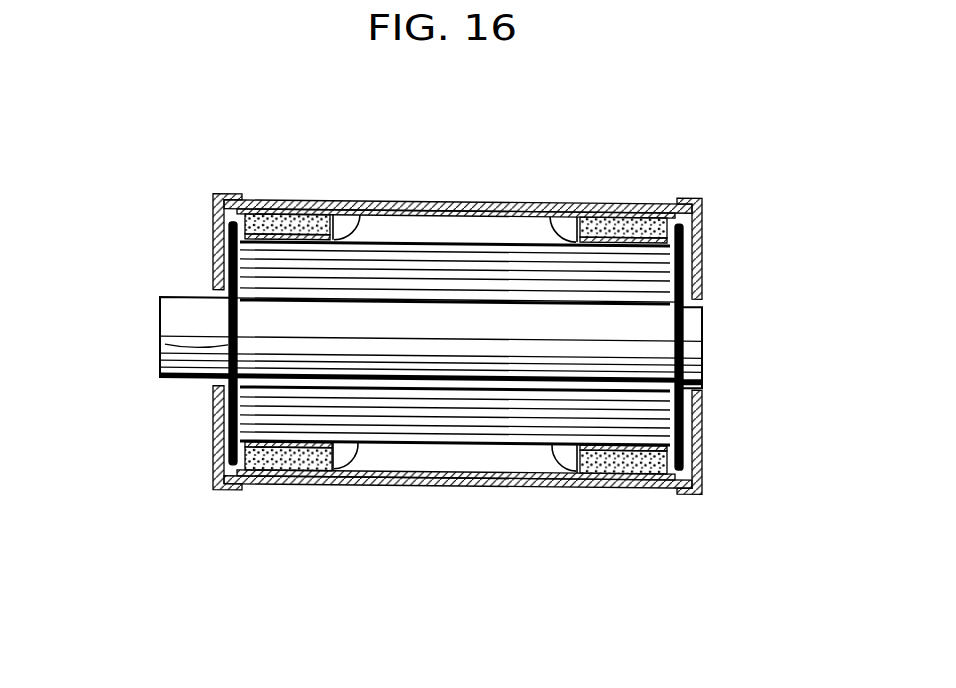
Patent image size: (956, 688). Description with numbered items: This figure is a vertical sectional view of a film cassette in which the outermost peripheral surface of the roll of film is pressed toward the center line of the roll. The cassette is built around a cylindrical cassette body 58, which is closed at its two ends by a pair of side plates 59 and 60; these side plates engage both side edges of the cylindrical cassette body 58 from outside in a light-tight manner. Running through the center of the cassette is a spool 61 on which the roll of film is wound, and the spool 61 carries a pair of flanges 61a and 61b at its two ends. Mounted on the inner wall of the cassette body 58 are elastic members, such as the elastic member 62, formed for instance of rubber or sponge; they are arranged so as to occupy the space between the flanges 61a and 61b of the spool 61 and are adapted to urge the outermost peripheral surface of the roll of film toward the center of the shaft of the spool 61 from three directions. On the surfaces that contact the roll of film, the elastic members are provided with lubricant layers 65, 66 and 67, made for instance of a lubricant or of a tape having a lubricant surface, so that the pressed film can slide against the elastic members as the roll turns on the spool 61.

The cylindrical cassette body 58 is at (450, 203).
The side plate 59 is at (702, 250).
The side plate 60 is at (213, 252).
The spool 61 is at (160, 318).
The flange 61a is at (702, 353).
The flange 61b is at (228, 344).
The elastic member 62 is at (290, 203).
The lubricant layer 65 is at (356, 216).
The lubricant layer 66 is at (357, 472).
The lubricant layer 67 is at (282, 474).